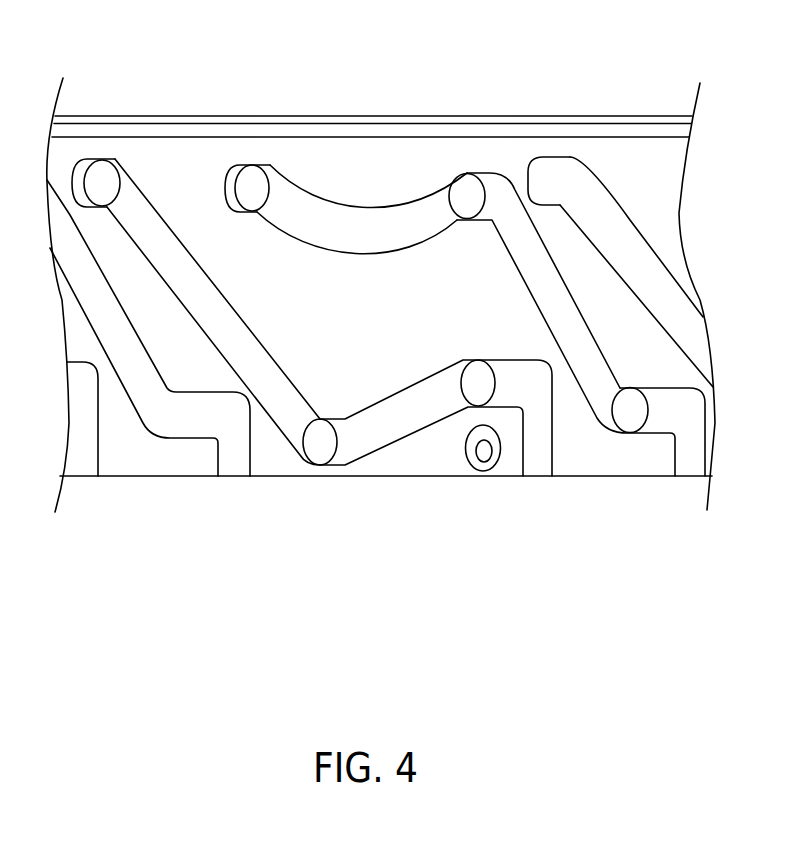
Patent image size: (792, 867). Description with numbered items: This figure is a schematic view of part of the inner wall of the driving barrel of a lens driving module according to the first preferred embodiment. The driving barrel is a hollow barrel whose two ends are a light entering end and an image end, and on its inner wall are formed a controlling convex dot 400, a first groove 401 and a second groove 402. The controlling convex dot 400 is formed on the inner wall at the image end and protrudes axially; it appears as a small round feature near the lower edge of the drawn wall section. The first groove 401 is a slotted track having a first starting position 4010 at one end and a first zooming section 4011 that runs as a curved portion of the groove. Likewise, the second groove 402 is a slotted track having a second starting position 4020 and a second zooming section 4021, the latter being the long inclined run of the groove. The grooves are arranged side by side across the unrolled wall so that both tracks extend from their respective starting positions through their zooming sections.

The controlling convex dot 400 is at (487, 457).
The first groove 401 is at (469, 311).
The first starting position 4010 is at (630, 417).
The first zooming section 4011 is at (380, 227).
The second groove 402 is at (312, 319).
The second starting position 4020 is at (478, 383).
The second zooming section 4021 is at (203, 312).